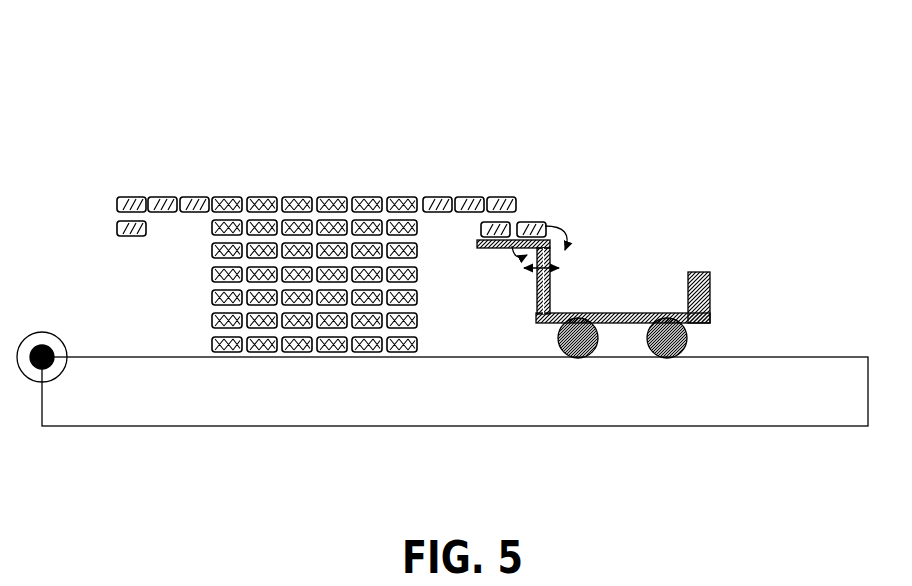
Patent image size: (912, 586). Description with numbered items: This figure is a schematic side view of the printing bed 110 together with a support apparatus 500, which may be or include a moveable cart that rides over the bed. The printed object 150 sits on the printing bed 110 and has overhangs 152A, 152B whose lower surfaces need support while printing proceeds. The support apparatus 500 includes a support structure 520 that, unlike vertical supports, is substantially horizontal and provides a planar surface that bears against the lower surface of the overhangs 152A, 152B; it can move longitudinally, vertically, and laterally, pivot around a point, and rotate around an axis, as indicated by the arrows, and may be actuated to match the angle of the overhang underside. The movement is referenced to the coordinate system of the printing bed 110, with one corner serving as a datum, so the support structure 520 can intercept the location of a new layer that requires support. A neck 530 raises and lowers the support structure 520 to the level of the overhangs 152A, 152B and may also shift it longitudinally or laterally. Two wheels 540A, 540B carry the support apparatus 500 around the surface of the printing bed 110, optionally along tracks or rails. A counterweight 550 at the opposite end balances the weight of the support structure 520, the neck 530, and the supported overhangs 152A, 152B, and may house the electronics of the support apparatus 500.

The printing bed 110 is at (42, 398).
The array of tiles 150 is at (347, 185).
The overhang 152A is at (181, 153).
The overhang 152B is at (470, 163).
The support apparatus 500 is at (616, 335).
The support structure 520 is at (508, 249).
The neck 530 is at (561, 254).
The wheel 540A is at (583, 358).
The wheel 540B is at (673, 358).
The counterweight 550 is at (712, 297).